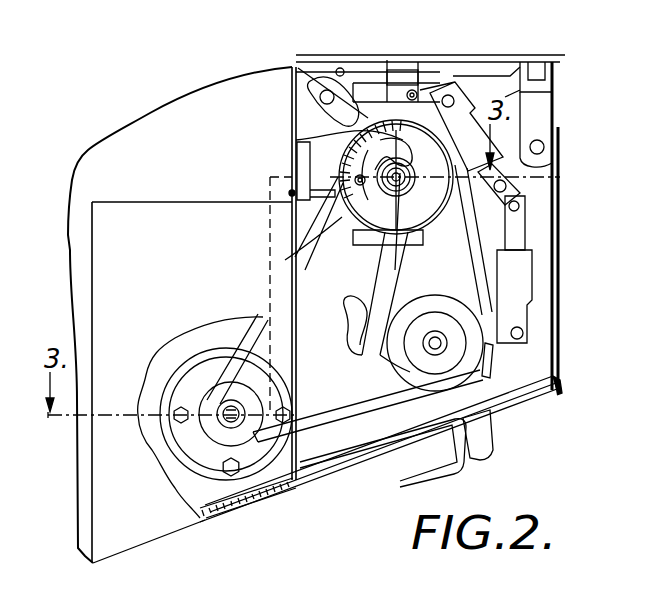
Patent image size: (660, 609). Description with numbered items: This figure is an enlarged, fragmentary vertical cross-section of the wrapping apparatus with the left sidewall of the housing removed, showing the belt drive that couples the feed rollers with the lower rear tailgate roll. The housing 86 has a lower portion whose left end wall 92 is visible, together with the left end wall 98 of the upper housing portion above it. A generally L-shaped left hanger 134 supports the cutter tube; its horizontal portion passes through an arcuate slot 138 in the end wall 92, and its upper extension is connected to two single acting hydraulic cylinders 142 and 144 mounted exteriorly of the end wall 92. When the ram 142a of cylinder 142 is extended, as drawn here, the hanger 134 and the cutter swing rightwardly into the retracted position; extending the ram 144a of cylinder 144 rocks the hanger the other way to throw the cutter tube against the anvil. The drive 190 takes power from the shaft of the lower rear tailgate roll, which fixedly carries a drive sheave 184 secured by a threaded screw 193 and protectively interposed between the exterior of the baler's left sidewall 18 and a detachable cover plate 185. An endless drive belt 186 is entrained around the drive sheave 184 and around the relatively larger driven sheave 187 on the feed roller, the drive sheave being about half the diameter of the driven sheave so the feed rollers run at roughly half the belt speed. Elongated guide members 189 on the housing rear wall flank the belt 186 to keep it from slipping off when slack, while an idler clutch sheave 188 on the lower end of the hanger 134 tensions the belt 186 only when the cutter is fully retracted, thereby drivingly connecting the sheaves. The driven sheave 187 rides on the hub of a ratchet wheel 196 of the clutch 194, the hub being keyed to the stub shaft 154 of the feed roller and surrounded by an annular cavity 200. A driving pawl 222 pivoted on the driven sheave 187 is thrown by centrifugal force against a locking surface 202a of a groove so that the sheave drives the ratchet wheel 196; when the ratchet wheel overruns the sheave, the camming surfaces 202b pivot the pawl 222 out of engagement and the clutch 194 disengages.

The left sidewall 18 is at (180, 315).
The housing 86 is at (556, 394).
The left end wall 92 is at (490, 400).
The left end wall 98 is at (510, 77).
The left hanger 134 is at (387, 310).
The arcuate slot 138 is at (360, 337).
The hydraulic cylinder 142 is at (527, 287).
The ram 142a is at (520, 227).
The hydraulic cylinder 144 is at (513, 162).
The ram 144a is at (520, 175).
The stub shaft 154 is at (398, 187).
The drive sheave 184 is at (217, 435).
The detachable cover plate 185 is at (117, 542).
The endless drive belt 186 is at (368, 402).
The driven sheave 187 is at (437, 233).
The idler clutch sheave 188 is at (465, 377).
The guide members 189 is at (322, 215).
The drive 190 is at (341, 432).
The threaded screw 193 is at (208, 398).
The clutch 194 is at (322, 136).
The ratchet wheel 196 is at (342, 181).
The annular cavity 200 is at (292, 68).
The locking surface 202a is at (403, 140).
The camming surface 202b is at (330, 250).
The driving pawl 222 is at (345, 170).